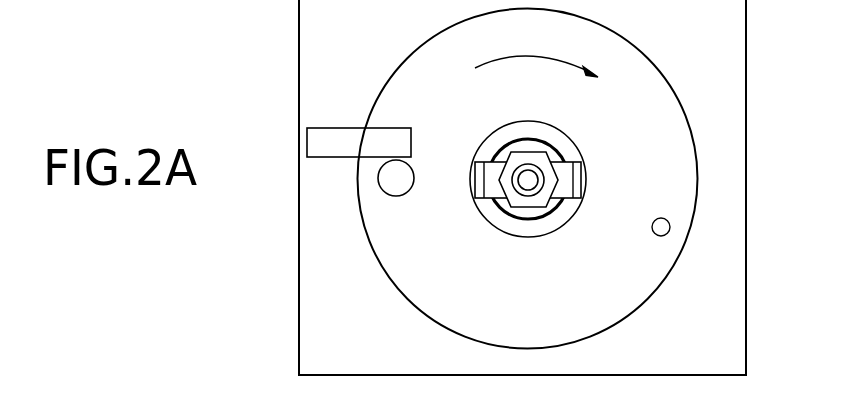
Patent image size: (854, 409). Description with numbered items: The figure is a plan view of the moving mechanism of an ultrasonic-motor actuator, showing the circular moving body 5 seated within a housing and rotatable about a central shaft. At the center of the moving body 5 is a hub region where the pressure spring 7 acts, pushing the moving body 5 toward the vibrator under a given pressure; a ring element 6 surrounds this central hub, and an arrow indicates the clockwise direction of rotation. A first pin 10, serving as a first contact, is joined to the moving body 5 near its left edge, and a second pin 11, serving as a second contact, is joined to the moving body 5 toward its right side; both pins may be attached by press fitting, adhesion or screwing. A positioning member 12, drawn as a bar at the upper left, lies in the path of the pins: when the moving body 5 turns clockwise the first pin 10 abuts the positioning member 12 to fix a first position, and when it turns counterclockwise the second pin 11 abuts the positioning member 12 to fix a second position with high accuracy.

The moving body 5 is at (605, 306).
The hub ring 6 is at (492, 217).
The pressure spring 7 is at (555, 190).
The first pin 10 is at (393, 177).
The second pin 11 is at (670, 225).
The positioning member 12 is at (325, 145).